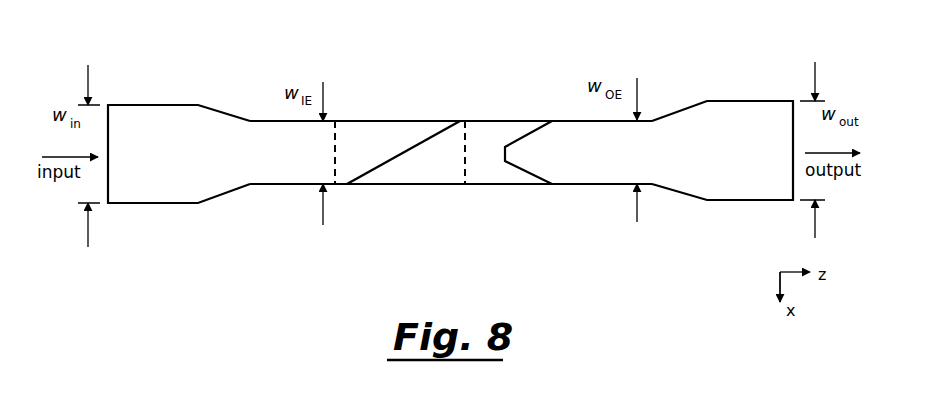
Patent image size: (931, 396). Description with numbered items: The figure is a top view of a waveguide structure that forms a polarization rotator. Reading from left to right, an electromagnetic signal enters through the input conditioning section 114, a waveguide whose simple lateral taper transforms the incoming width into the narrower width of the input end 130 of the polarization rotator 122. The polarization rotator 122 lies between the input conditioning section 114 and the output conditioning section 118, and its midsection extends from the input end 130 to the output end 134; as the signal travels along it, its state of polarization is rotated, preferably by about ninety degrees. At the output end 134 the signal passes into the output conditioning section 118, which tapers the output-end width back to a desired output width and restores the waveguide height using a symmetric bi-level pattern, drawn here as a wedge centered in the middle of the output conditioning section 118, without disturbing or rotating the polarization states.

The input conditioning section 114 is at (332, 50).
The polarization rotator 122 is at (463, 50).
The output conditioning section 118 is at (790, 50).
The input end 130 is at (332, 155).
The output end 134 is at (465, 155).